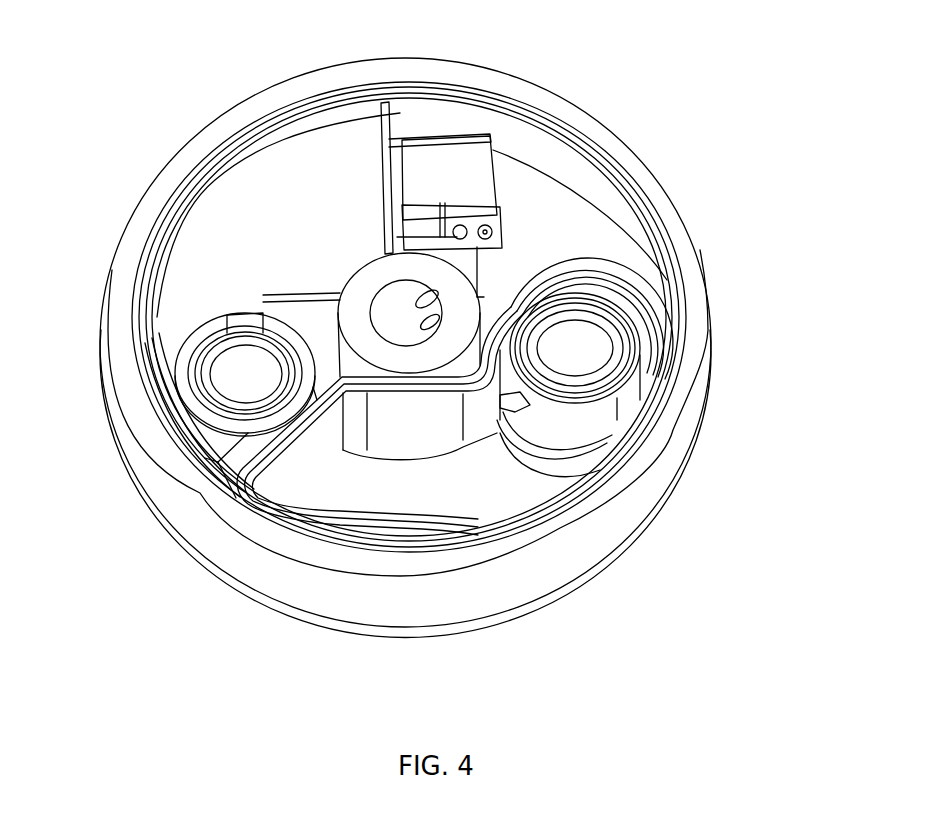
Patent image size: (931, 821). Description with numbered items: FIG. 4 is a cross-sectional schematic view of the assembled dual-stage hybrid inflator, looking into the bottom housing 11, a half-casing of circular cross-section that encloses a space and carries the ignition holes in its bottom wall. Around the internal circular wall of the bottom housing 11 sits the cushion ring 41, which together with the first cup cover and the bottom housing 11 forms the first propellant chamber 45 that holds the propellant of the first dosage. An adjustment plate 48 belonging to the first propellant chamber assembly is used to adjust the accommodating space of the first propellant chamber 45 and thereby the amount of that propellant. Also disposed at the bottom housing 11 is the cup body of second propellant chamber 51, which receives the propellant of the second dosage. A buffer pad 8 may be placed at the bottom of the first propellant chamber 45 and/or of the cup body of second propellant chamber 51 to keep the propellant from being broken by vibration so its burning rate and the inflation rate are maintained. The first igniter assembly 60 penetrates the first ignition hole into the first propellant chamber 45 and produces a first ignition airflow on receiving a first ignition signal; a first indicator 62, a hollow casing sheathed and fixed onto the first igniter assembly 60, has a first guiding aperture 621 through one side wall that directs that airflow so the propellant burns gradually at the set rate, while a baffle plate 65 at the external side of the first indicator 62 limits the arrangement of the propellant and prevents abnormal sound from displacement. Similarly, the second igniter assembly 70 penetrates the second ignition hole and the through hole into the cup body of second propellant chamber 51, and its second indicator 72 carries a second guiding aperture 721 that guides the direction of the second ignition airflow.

The buffer pad 8 is at (437, 510).
The bottom housing 11 is at (533, 560).
The cushion ring 41 is at (590, 145).
The first propellant chamber 45 is at (275, 196).
The adjustment plate 48 is at (455, 165).
The cup body of second propellant chamber 51 is at (303, 480).
The first igniter assembly 60 is at (243, 378).
The first indicator 62 is at (200, 340).
The first guiding aperture 621 is at (228, 327).
The baffle plate 65 is at (185, 428).
The second igniter assembly 70 is at (583, 346).
The second indicator 72 is at (617, 389).
The second guiding aperture 721 is at (520, 398).